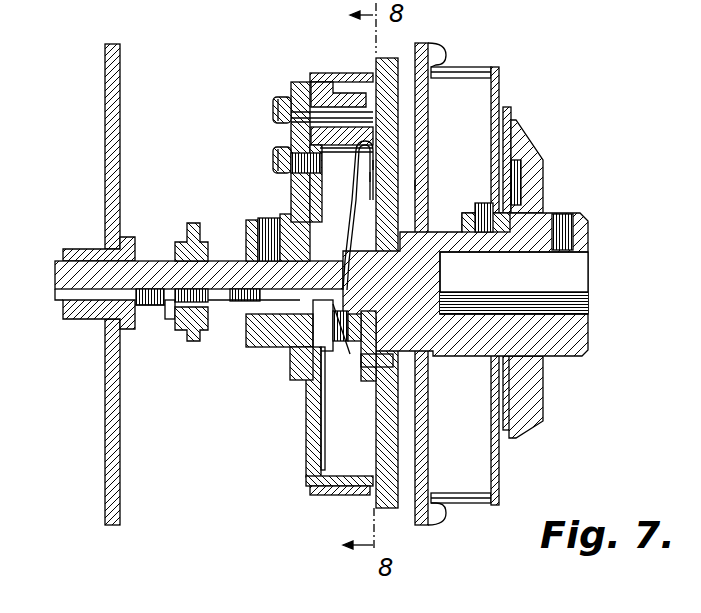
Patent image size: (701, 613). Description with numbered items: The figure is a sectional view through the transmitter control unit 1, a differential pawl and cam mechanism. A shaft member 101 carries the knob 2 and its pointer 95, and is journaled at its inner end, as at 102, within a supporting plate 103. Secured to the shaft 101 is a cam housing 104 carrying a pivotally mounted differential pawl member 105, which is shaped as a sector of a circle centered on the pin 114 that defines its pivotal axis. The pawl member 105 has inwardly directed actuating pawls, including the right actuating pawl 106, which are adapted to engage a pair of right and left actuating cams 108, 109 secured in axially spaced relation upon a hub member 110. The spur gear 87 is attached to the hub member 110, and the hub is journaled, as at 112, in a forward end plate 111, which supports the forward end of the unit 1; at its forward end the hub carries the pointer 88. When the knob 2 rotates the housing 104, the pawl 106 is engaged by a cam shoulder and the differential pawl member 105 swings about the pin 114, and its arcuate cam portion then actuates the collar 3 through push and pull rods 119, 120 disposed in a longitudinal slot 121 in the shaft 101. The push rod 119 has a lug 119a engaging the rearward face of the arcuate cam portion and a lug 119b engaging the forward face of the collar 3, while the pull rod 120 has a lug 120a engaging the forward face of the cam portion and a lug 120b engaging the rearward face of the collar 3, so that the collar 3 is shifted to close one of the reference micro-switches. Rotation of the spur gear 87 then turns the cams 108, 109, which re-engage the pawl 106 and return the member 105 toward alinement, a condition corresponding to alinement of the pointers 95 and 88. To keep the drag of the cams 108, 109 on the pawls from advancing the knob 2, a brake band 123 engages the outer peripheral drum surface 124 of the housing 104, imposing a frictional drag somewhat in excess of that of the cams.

The transmitter control unit 1 is at (270, 113).
The knob 2 is at (543, 173).
The collar 3 is at (200, 240).
The spur gear 87 is at (376, 68).
The pointer 88 is at (499, 110).
The pointer 95 is at (516, 118).
The shaft member 101 is at (574, 282).
The journal 102 is at (72, 311).
The supporting plate 103 is at (110, 348).
The cam housing 104 is at (271, 348).
The differential pawl member 105 is at (345, 232).
The right actuating pawl 106 is at (376, 165).
The right actuating cam 108 is at (362, 193).
The left actuating cam 109 is at (375, 178).
The hub member 110 is at (465, 212).
The forward end plate 111 is at (421, 185).
The journal 112 is at (478, 205).
The pin 114 is at (335, 73).
The push rod 119 is at (232, 300).
The lug 119a is at (310, 378).
The lug 119b is at (212, 328).
The pull rod 120 is at (231, 290).
The lug 120a is at (350, 348).
The lug 120b is at (170, 328).
The longitudinal slot 121 is at (152, 311).
The brake band 123 is at (316, 495).
The outer peripheral surface 124 is at (345, 496).